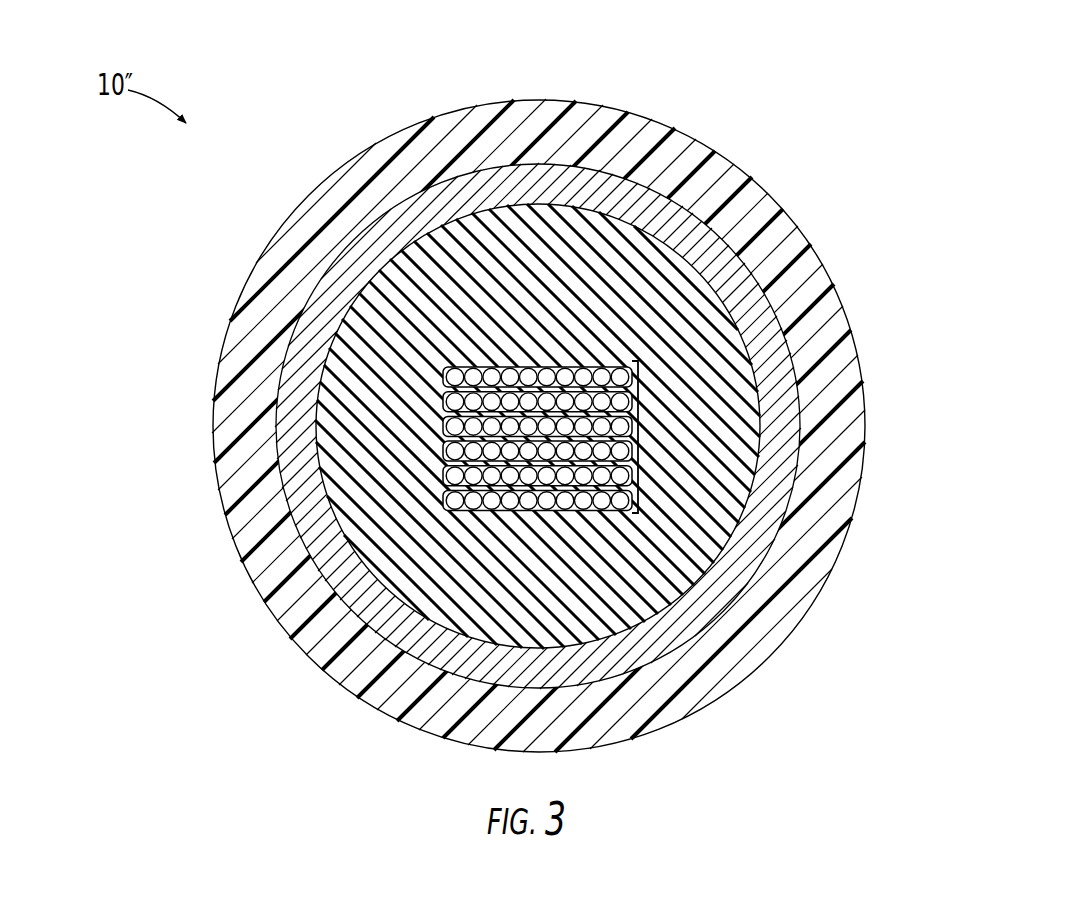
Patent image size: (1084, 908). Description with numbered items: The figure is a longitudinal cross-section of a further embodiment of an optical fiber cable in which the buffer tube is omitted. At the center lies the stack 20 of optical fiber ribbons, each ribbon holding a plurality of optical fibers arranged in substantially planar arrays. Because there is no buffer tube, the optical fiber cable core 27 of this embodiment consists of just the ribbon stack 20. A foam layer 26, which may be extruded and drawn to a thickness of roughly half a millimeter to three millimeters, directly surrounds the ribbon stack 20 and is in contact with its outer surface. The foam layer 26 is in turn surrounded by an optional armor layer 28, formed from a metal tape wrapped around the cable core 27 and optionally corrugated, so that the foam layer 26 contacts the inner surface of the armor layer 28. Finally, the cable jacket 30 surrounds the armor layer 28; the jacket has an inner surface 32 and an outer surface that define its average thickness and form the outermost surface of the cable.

The stack of optical fiber ribbons 20 is at (643, 437).
The foam layer 26 is at (650, 263).
The optical fiber cable core 27 is at (613, 512).
The armor layer 28 is at (378, 253).
The cable jacket 30 is at (237, 483).
The inner surface of the cable jacket 32 is at (281, 358).